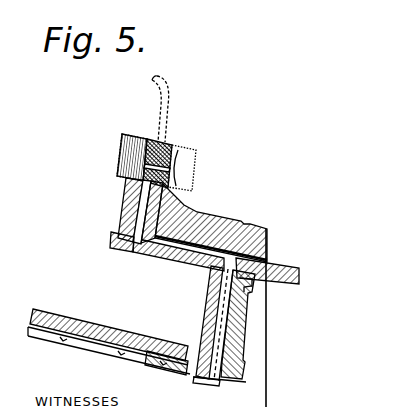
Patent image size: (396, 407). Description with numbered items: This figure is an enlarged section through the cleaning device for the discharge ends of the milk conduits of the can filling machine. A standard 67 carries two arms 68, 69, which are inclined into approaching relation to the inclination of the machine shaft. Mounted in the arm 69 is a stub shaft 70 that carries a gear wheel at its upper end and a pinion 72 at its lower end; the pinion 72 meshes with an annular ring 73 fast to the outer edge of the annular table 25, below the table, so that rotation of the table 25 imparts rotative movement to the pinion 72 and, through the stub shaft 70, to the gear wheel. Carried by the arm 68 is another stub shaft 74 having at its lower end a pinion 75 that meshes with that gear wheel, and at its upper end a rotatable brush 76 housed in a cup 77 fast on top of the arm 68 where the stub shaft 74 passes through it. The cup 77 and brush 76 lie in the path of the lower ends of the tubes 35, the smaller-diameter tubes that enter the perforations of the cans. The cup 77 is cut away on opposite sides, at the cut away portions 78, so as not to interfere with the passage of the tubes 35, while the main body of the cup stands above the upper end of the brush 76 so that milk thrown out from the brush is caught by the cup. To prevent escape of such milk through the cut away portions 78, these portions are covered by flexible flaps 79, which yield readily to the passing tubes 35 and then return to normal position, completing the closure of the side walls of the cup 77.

The annular table 25 is at (62, 321).
The tube 35 is at (171, 110).
The standard 67 is at (258, 393).
The arm 68 is at (262, 235).
The arm 69 is at (247, 332).
The stub shaft 70 is at (221, 315).
The pinion 72 is at (198, 371).
The annular ring 73 is at (176, 370).
The stub shaft 74 is at (133, 203).
The pinion 75 is at (115, 242).
The rotatable brush 76 is at (178, 160).
The cup 77 is at (298, 272).
The cut away portions 78 is at (152, 141).
The flexible flaps 79 is at (173, 143).